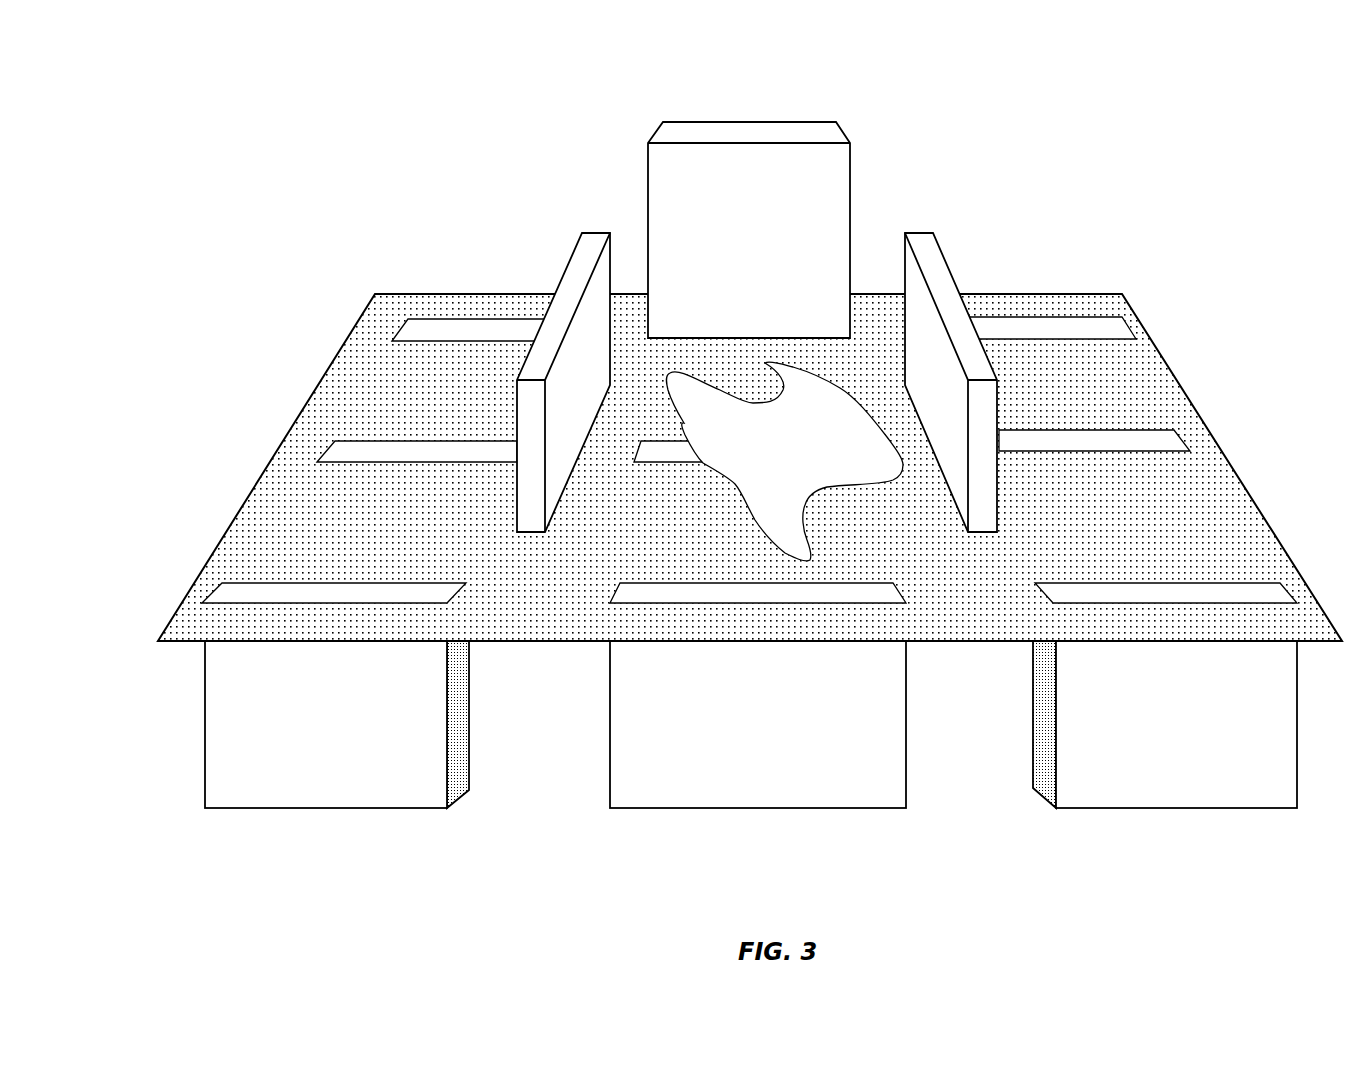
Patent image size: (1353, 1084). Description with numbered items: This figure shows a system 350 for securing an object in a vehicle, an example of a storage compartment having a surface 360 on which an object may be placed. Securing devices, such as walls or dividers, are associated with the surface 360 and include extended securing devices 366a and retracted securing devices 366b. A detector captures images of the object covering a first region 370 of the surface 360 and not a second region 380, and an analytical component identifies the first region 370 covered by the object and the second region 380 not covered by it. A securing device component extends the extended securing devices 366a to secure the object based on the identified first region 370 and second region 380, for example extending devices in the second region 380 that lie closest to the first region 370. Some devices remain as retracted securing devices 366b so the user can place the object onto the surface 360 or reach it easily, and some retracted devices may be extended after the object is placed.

The processing system 350 is at (138, 79).
The surface 360 is at (278, 452).
The extended securing devices 366a is at (663, 122).
The retracted securing devices 366b is at (345, 808).
The first region 370 is at (809, 456).
The second region 380 is at (1168, 501).